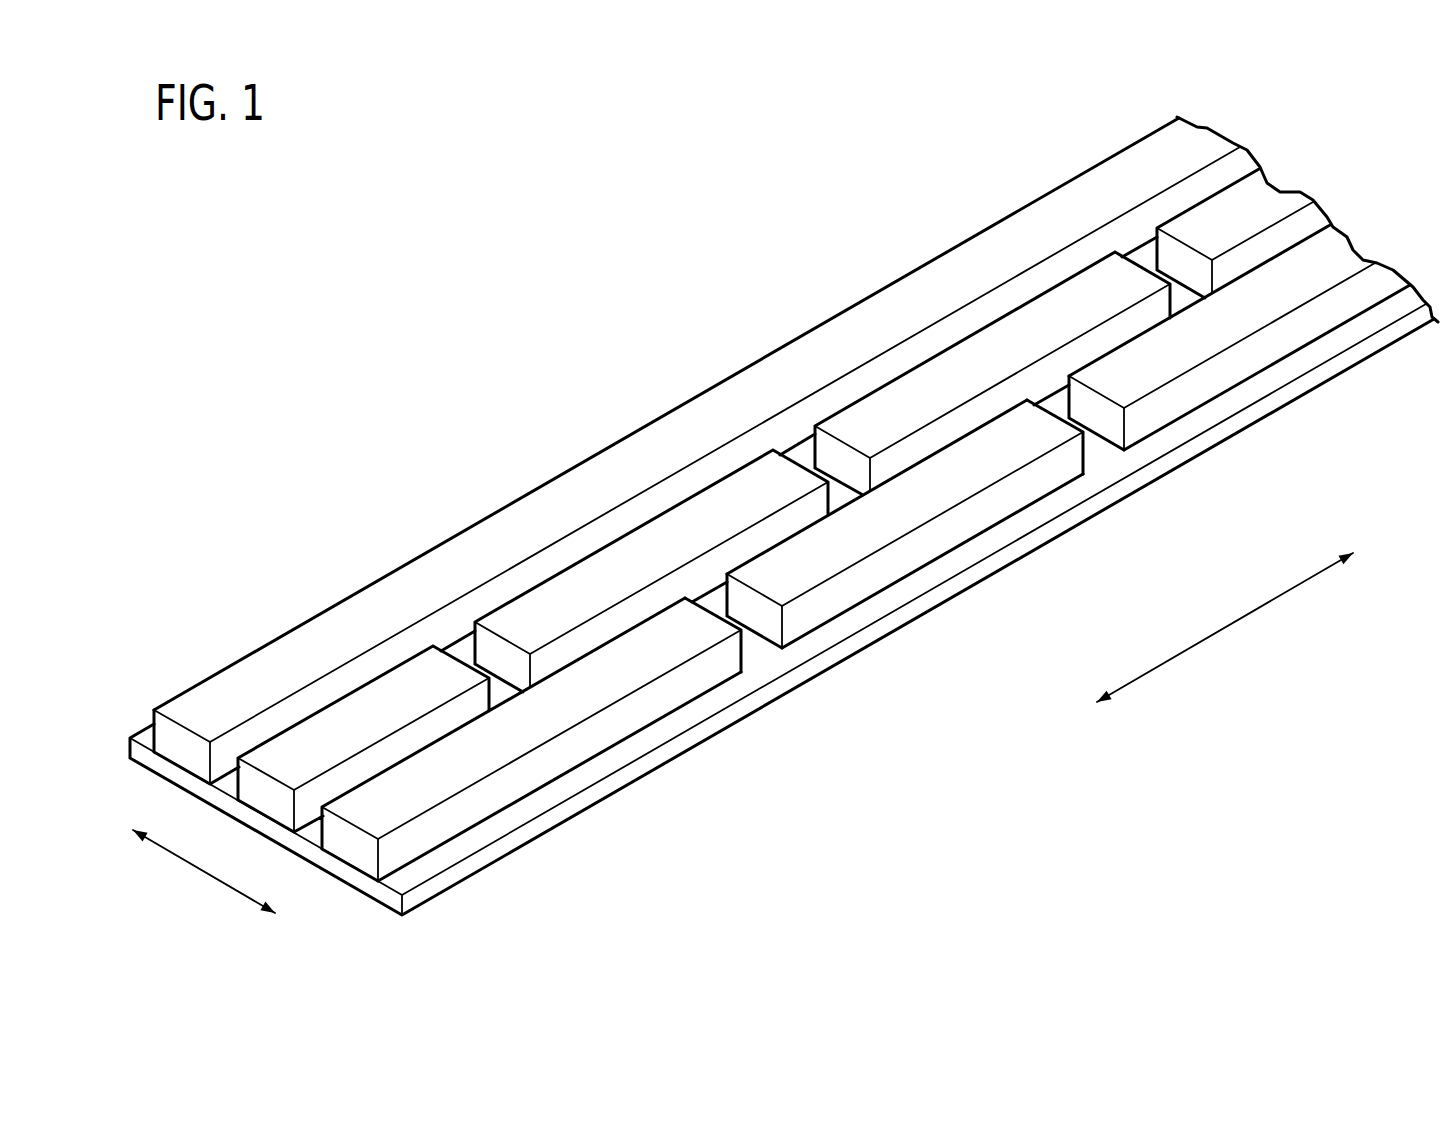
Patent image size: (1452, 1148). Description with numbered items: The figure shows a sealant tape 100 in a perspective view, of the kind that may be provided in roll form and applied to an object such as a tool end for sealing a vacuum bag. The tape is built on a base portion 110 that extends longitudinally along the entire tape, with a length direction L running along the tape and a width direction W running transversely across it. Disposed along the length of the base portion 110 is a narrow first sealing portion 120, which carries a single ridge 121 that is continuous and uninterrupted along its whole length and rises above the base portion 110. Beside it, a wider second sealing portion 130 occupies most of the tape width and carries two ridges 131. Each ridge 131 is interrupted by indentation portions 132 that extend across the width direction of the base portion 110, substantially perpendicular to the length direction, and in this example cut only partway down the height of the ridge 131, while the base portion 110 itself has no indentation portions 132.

The sealant tape 100 is at (635, 237).
The base portion 110 is at (1038, 550).
The first sealing portion 120 is at (697, 451).
The ridge 121 is at (507, 527).
The second sealing portion 130 is at (824, 527).
The ridge 131 is at (573, 743).
The indentation portions 132 is at (1093, 425).